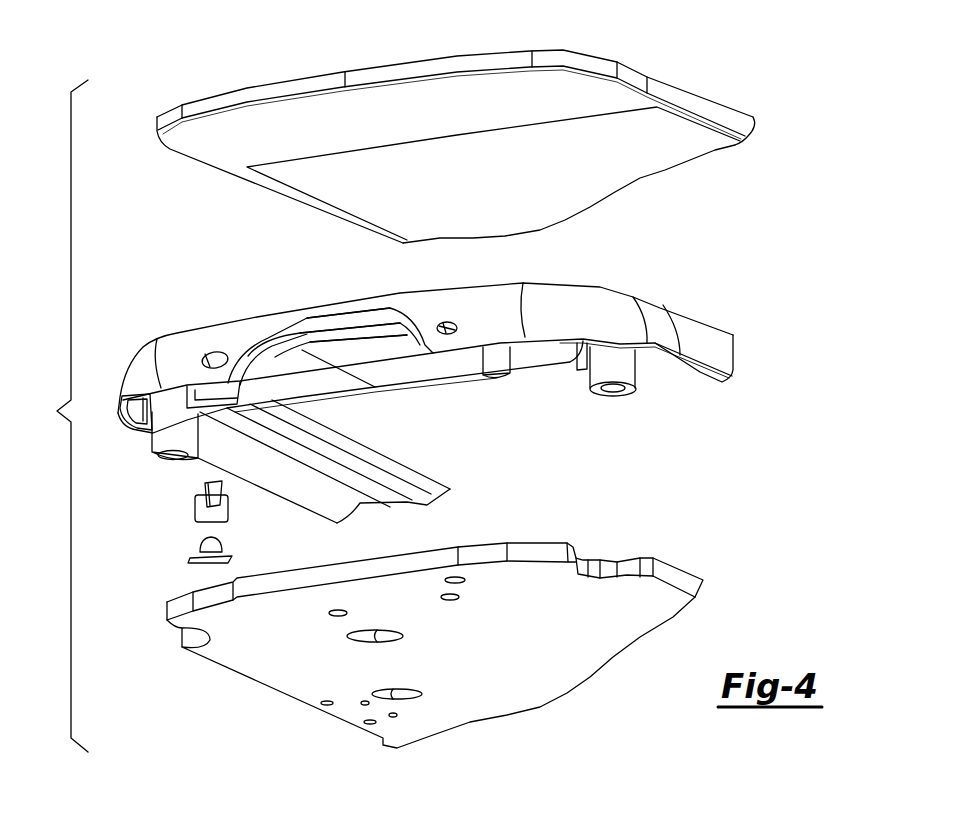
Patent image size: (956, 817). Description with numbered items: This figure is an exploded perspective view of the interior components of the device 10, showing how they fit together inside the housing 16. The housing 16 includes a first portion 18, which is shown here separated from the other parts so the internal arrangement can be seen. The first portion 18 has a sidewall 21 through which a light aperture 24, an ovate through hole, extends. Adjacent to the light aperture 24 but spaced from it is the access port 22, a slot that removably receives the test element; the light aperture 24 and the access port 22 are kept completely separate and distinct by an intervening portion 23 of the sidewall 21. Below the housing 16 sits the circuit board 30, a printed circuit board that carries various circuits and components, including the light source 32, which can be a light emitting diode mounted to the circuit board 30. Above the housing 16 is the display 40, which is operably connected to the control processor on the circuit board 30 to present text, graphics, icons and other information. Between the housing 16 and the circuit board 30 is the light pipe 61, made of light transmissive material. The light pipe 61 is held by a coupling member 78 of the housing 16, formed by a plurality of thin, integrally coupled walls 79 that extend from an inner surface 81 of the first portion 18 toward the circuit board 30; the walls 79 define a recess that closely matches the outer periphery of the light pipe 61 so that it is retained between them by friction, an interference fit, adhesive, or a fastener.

The device 10 is at (59, 416).
The housing 16 is at (697, 316).
The first portion 18 is at (726, 374).
The sidewall 21 is at (184, 340).
The access port 22 is at (343, 330).
The intervening portion 23 is at (246, 350).
The light aperture 24 is at (209, 352).
The circuit board 30 is at (532, 548).
The light source 32 is at (218, 549).
The display 40 is at (403, 64).
The light pipe 61 is at (190, 497).
The coupling member 78 is at (243, 389).
The walls 79 is at (187, 397).
The inner surface 81 is at (277, 357).